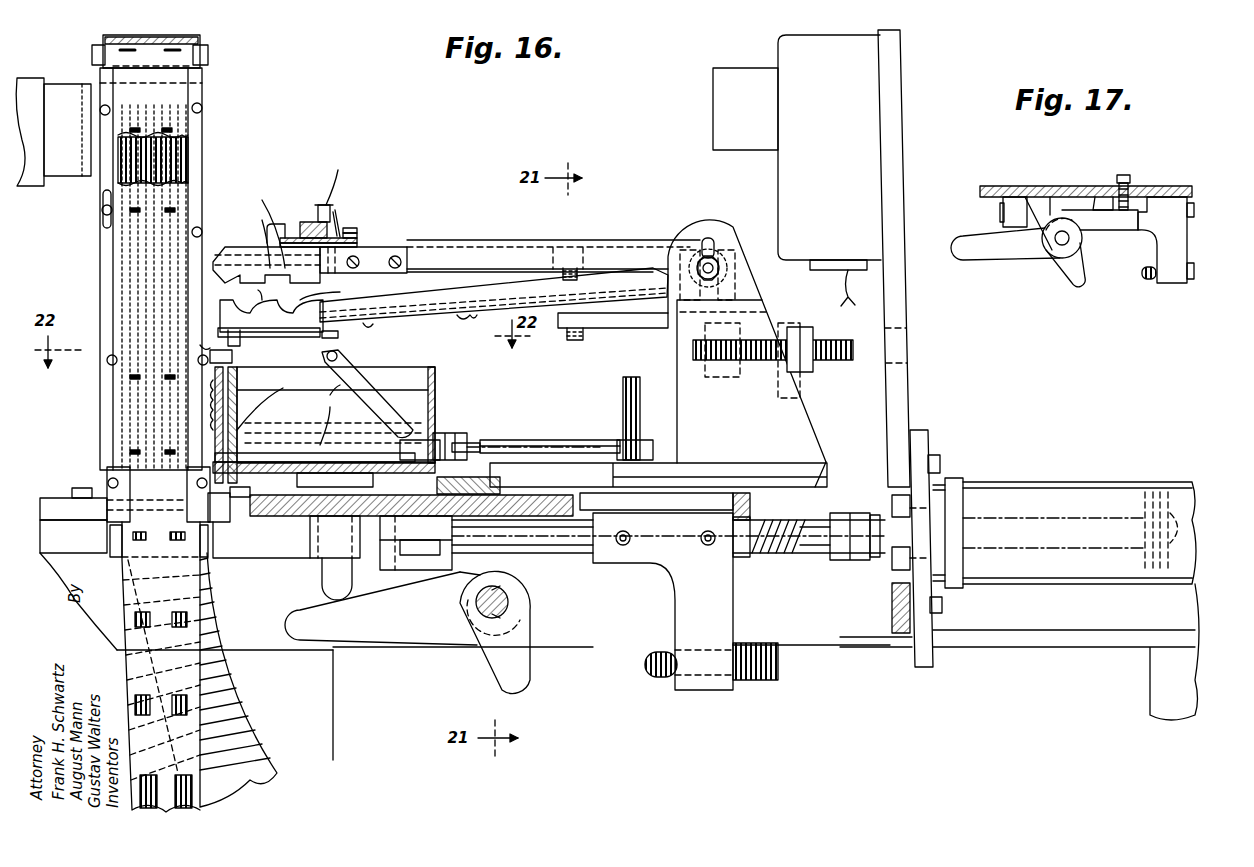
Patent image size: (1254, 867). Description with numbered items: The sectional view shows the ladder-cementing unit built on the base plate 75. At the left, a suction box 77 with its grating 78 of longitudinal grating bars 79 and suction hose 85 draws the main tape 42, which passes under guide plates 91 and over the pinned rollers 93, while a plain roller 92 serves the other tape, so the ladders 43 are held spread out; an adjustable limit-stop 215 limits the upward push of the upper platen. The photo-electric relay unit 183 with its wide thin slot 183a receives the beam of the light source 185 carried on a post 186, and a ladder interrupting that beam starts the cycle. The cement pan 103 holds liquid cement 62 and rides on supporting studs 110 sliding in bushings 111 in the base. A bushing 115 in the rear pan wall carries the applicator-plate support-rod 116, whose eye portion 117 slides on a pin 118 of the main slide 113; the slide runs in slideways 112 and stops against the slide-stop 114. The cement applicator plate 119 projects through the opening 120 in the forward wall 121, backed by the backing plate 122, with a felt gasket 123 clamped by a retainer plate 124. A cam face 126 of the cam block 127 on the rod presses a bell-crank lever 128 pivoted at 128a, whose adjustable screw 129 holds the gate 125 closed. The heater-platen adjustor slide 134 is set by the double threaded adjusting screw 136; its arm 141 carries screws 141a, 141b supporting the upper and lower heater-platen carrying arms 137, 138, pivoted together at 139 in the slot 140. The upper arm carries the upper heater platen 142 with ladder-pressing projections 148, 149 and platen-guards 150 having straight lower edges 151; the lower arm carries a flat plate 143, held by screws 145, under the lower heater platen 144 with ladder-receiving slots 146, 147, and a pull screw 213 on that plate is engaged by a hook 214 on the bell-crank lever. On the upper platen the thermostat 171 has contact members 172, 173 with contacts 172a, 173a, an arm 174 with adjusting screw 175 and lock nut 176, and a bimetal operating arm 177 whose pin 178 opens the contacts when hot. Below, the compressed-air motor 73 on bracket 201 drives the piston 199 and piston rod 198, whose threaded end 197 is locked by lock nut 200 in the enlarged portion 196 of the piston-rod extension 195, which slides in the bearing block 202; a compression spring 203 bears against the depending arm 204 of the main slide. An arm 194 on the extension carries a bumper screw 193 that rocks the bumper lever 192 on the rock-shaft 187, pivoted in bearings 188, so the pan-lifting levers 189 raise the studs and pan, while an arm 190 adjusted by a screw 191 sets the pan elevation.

In FIG. 16, the main tape 42 is at (150, 36).
In FIG. 16, the plain roller 92 is at (93, 52).
In FIG. 16, the rollers 93 is at (125, 58).
In FIG. 16, the photo-electric relay unit 183 is at (65, 168).
In FIG. 16, the slot 183a is at (85, 90).
In FIG. 16, the ladder 43 is at (140, 130).
In FIG. 16, the grating 78 is at (193, 148).
In FIG. 16, the longitudinal grating bars 79 is at (170, 175).
In FIG. 16, the suction box 77 is at (100, 262).
In FIG. 16, the adjustable limit-stop 215 is at (103, 240).
In FIG. 16, the guide plates 91 is at (130, 496).
In FIG. 16, the retainer plate 124 is at (222, 522).
In FIG. 16, the suction hose 85 is at (235, 690).
In FIG. 16, the upper heater platen 142 is at (248, 262).
In FIG. 16, the ladder-pressing projection 148 is at (248, 234).
In FIG. 16, the ladder-pressing projection 149 is at (257, 225).
In FIG. 16, the bimetal operating arm 177 is at (357, 247).
In FIG. 16, the straight lower edge 151 is at (330, 273).
In FIG. 16, the ladder-receiving slot 146 is at (238, 290).
In FIG. 16, the platen-guards 150 is at (268, 292).
In FIG. 16, the ladder-receiving slot 147 is at (333, 290).
In FIG. 16, the lower heater platen 144 is at (270, 337).
In FIG. 16, the adjustable screw 129 is at (240, 342).
In FIG. 16, the pull screw 213 is at (338, 336).
In FIG. 16, the hook 214 is at (200, 345).
In FIG. 16, the pin 178 is at (357, 240).
In FIG. 16, the upper contact member 172 is at (305, 222).
In FIG. 16, the lower contact member 173 is at (282, 224).
In FIG. 16, the adjusting screw 175 is at (322, 205).
In FIG. 16, the lock nut 176 is at (340, 178).
In FIG. 16, the arm 174 is at (340, 210).
In FIG. 16, the thermostat 171 is at (360, 212).
In FIG. 16, the electric contact 172a is at (357, 228).
In FIG. 16, the electric contact 173a is at (357, 236).
In FIG. 16, the upper heater-platen carrying arm 137 is at (600, 240).
In FIG. 16, the lower heater-platen carrying arm 138 is at (472, 291).
In FIG. 16, the screw 141a is at (560, 278).
In FIG. 16, the arm 141 is at (630, 328).
In FIG. 16, the screw 141b is at (572, 340).
In FIG. 16, the screws 145 is at (488, 324).
In FIG. 16, the forward flat plate 143 is at (418, 323).
In FIG. 16, the heater-platen adjustor slide 134 is at (760, 285).
In FIG. 16, the pivot 139 is at (714, 258).
In FIG. 16, the slot 140 is at (708, 238).
In FIG. 16, the main slide 113 is at (803, 416).
In FIG. 16, the double threaded adjusting screw 136 is at (835, 340).
In FIG. 16, the photo-electric light source 185 is at (867, 97).
In FIG. 16, the post 186 is at (907, 290).
In FIG. 16, the backing plate 122 is at (232, 358).
In FIG. 16, the forward wall 121 is at (237, 382).
In FIG. 16, the gate 125 is at (275, 400).
In FIG. 16, the cement pan 103 is at (435, 380).
In FIG. 16, the opening 120 is at (245, 450).
In FIG. 16, the cement applicator plate 119 is at (280, 460).
In FIG. 16, the liquid cement 62 is at (331, 417).
In FIG. 16, the cam block 127 is at (340, 440).
In FIG. 16, the bell-crank lever 128 is at (368, 385).
In FIG. 16, the pivot 128a is at (330, 382).
In FIG. 16, the cam face 126 is at (425, 440).
In FIG. 16, the bushing 115 is at (460, 433).
In FIG. 16, the felt gasket 123 is at (240, 490).
In FIG. 16, the slide-stop 114 is at (437, 485).
In FIG. 16, the bushings 111 is at (310, 535).
In FIG. 16, the supporting studs 110 is at (322, 580).
In FIG. 16, the piston-rod extension 195 is at (383, 570).
In FIG. 17, the piston-rod extension 195 is at (1194, 210).
In FIG. 16, the bearing block 202 is at (410, 560).
In FIG. 17, the bearing block 202 is at (1010, 227).
In FIG. 16, the slideways 112 is at (585, 440).
In FIG. 16, the applicator-plate support-rod 116 is at (555, 440).
In FIG. 16, the pin 118 is at (640, 395).
In FIG. 16, the eye portion 117 is at (645, 440).
In FIG. 16, the base plate 75 is at (820, 470).
In FIG. 17, the base plate 75 is at (1068, 186).
In FIG. 16, the arm 194 is at (675, 618).
In FIG. 17, the arm 194 is at (1187, 243).
In FIG. 16, the bumper screw 193 is at (655, 677).
In FIG. 17, the bumper screw 193 is at (1148, 279).
In FIG. 16, the bearings 188 is at (443, 627).
In FIG. 17, the bearings 188 is at (1045, 205).
In FIG. 16, the pan-lifting levers 189 is at (443, 627).
In FIG. 17, the pan-lifting levers 189 is at (1005, 260).
In FIG. 16, the bumper lever 192 is at (530, 668).
In FIG. 16, the rock-shaft 187 is at (510, 605).
In FIG. 17, the rock-shaft 187 is at (1060, 250).
In FIG. 16, the enlarged rear end portion 196 is at (820, 553).
In FIG. 16, the depending arm 204 is at (745, 557).
In FIG. 16, the compression spring 203 is at (785, 555).
In FIG. 16, the lock nut 200 is at (860, 560).
In FIG. 16, the forward threaded end 197 is at (878, 557).
In FIG. 16, the bracket 201 is at (933, 655).
In FIG. 16, the piston rod 198 is at (1020, 520).
In FIG. 16, the piston 199 is at (1150, 490).
In FIG. 16, the compressed-air motor 73 is at (1098, 484).
In FIG. 17, the screw 191 is at (1130, 178).
In FIG. 17, the arm 190 is at (1108, 230).